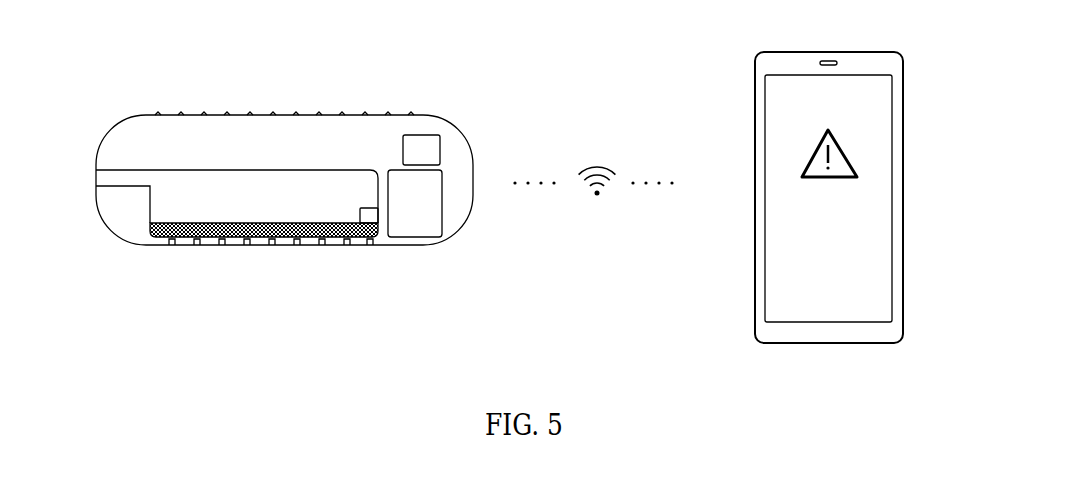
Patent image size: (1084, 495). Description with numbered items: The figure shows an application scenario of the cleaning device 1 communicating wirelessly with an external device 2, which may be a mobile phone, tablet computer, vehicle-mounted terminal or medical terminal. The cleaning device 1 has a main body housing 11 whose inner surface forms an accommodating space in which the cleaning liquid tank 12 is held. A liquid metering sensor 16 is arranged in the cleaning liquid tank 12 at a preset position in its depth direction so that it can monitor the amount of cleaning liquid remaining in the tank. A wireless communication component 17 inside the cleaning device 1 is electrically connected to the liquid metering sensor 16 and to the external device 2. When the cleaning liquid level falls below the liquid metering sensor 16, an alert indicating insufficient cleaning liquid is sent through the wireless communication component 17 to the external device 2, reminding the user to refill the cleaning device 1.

The cleaning device 1 is at (150, 95).
The external device 2 is at (793, 93).
The main body housing 11 is at (432, 117).
The cleaning liquid tank 12 is at (215, 205).
The liquid metering sensor 16 is at (368, 212).
The wireless communication component 17 is at (425, 152).